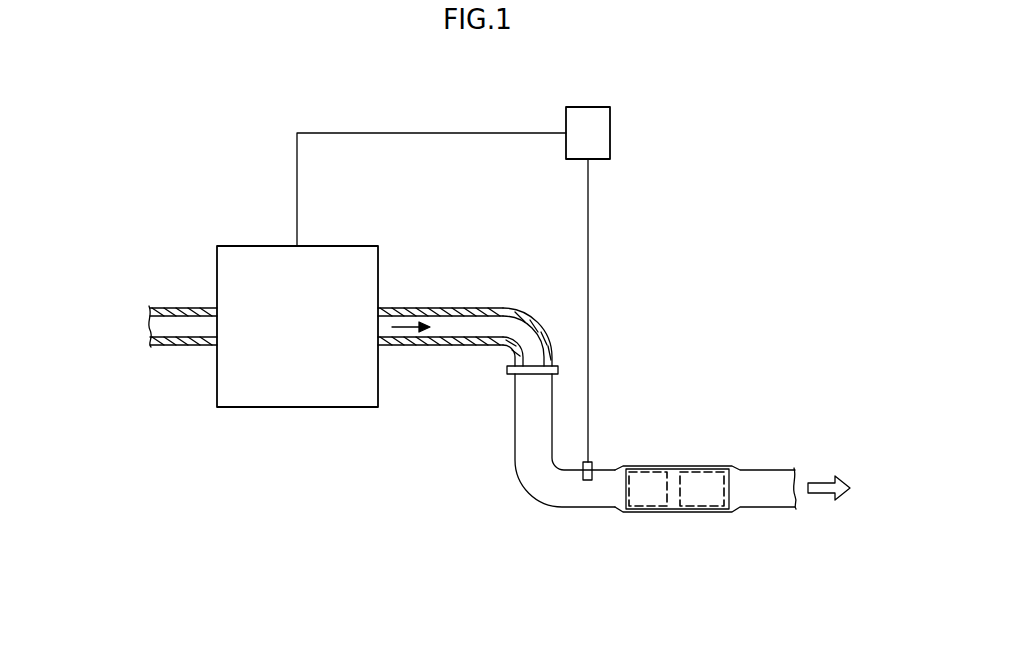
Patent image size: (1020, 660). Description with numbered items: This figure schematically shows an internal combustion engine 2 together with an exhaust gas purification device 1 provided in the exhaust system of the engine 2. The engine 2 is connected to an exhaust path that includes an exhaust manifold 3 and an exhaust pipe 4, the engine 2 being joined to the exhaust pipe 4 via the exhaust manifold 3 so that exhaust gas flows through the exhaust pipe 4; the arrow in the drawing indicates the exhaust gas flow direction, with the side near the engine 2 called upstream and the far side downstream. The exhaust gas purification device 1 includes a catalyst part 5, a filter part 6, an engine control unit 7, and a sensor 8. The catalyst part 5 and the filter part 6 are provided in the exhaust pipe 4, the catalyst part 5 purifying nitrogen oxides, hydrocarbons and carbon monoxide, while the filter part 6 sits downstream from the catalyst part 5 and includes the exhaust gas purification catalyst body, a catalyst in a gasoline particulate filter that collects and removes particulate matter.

The exhaust gas purification device 1 is at (729, 115).
The internal combustion engine 2 is at (359, 237).
The exhaust manifold 3 is at (470, 307).
The exhaust pipe 4 is at (514, 418).
The catalyst part 5 is at (652, 466).
The filter part 6 is at (701, 466).
The engine control unit 7 is at (611, 123).
The sensor 8 is at (586, 481).